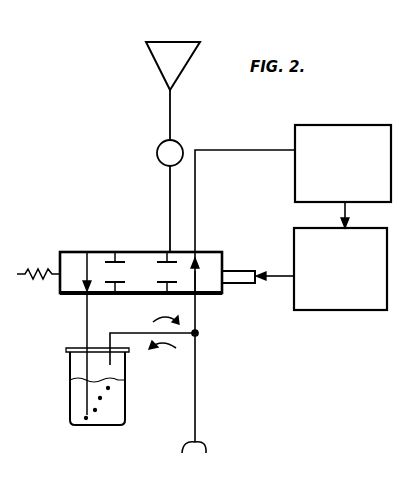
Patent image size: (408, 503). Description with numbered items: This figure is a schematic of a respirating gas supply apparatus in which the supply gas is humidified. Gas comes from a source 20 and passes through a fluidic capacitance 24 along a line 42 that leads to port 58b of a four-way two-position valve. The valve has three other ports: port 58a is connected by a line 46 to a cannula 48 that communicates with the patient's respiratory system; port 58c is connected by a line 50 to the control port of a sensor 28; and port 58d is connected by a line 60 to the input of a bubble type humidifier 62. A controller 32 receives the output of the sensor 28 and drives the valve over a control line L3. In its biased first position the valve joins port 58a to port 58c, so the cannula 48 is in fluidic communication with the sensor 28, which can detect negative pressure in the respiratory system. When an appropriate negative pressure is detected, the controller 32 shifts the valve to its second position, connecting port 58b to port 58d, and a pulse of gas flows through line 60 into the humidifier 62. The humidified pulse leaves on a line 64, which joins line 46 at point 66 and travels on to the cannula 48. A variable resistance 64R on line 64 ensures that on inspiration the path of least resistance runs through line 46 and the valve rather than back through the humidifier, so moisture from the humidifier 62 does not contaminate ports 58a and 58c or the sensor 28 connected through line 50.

The source of gas 20 is at (190, 58).
The fluidic capacitance 24 is at (181, 141).
The line 42 is at (168, 183).
The line 50 is at (263, 148).
The sensor 28 is at (332, 125).
The controller 32 is at (318, 311).
The control signal line L3 is at (273, 280).
The port 58b is at (86, 252).
The port 58c is at (114, 252).
The port 58d is at (85, 295).
The port 58a is at (113, 294).
The line 60 is at (85, 330).
The point 66 is at (198, 334).
The humidifier 62 is at (70, 405).
The line 64 is at (133, 338).
The variable resistance 64R is at (165, 348).
The line 46 is at (196, 375).
The cannula 48 is at (206, 447).